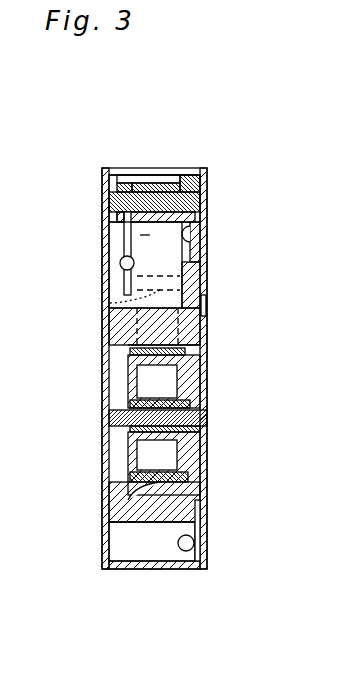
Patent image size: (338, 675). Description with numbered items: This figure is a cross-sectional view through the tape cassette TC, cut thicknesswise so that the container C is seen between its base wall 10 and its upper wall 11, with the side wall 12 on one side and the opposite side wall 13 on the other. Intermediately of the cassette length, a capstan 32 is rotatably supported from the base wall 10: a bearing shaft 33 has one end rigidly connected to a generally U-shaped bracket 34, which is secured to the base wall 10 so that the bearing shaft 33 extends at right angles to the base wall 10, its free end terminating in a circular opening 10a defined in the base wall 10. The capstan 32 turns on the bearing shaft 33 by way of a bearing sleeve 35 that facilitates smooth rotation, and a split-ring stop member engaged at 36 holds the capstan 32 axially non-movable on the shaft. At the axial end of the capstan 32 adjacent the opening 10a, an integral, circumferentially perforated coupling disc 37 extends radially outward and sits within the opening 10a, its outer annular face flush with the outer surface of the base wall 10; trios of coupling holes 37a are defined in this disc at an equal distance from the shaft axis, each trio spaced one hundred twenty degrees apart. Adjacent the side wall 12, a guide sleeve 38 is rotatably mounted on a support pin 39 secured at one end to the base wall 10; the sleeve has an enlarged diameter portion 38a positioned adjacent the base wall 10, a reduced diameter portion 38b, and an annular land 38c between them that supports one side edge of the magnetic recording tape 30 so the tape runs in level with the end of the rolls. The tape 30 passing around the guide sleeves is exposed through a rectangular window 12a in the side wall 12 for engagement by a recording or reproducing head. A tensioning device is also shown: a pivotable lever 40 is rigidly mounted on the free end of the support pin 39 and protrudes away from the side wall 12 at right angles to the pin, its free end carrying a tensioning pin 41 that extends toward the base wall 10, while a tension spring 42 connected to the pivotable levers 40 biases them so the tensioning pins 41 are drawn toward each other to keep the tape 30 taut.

The base wall 10 is at (207, 540).
The circular opening 10a is at (207, 290).
The upper wall 11 is at (109, 378).
The side wall 12 is at (118, 174).
The rectangular window 12a is at (165, 180).
The side wall 13 is at (144, 571).
The magnetic recording tape 30 is at (109, 225).
The capstan 32 is at (109, 505).
The bearing shaft 33 is at (109, 418).
The U-shaped bracket 34 is at (109, 340).
The bearing sleeve 35 is at (109, 452).
The split ring engagement 36 is at (207, 378).
The coupling disc 37 is at (207, 342).
The coupling holes 37a is at (207, 313).
The guide sleeve 38 is at (208, 200).
The enlarged diameter portion 38a is at (207, 245).
The reduced diameter portion 38b is at (144, 182).
The annular land 38c is at (183, 180).
The support pin 39 is at (207, 205).
The pivotable lever 40 is at (109, 243).
The tensioning pin 41 is at (109, 303).
The tension spring 42 is at (112, 268).
The container C is at (97, 549).
The tape cassette TC is at (222, 226).